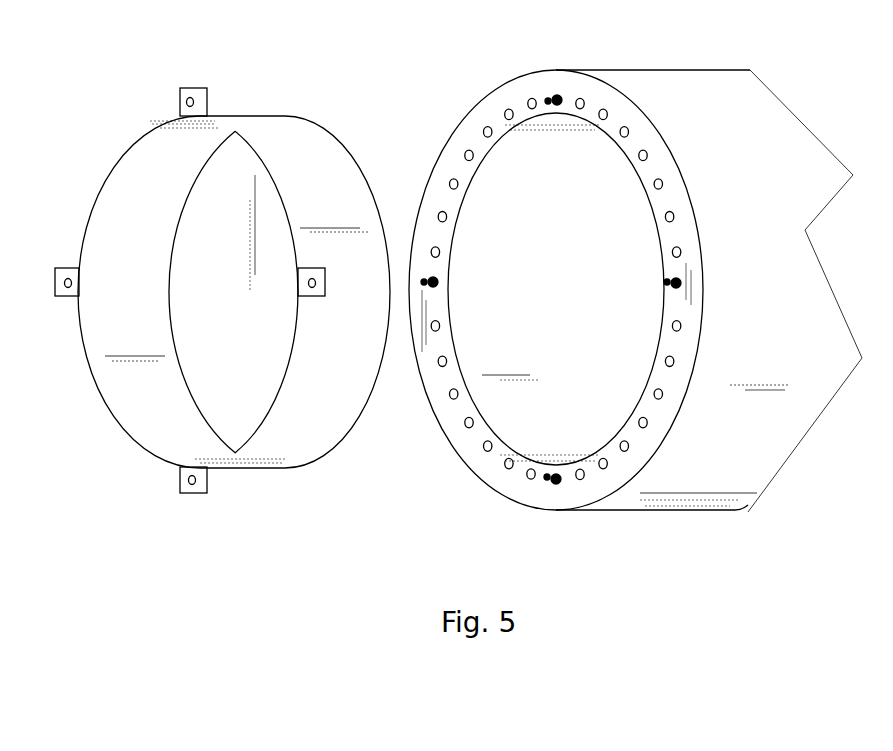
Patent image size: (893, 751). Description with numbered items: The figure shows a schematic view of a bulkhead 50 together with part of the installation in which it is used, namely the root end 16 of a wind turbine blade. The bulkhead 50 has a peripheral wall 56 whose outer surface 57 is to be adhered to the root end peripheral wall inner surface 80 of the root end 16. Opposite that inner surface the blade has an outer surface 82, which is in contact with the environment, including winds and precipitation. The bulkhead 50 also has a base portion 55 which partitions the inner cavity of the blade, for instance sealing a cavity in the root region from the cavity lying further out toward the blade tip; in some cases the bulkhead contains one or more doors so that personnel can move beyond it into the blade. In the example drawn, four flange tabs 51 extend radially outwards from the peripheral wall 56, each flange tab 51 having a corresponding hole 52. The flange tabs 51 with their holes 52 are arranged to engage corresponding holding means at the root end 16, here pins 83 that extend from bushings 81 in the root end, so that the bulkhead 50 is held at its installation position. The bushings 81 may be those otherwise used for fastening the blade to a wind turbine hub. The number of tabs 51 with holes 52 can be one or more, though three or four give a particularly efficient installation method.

The root end 16 is at (481, 70).
The bulkhead 50 is at (335, 83).
The flange tab 51 is at (182, 91).
The hole 52 is at (194, 101).
The base portion 55 is at (210, 402).
The peripheral wall 56 is at (125, 193).
The outer surface 57 is at (313, 420).
The root end peripheral wall inner surface 80 is at (508, 147).
The bushing 81 is at (528, 475).
The outer surface 82 is at (743, 316).
The pin 83 is at (558, 105).